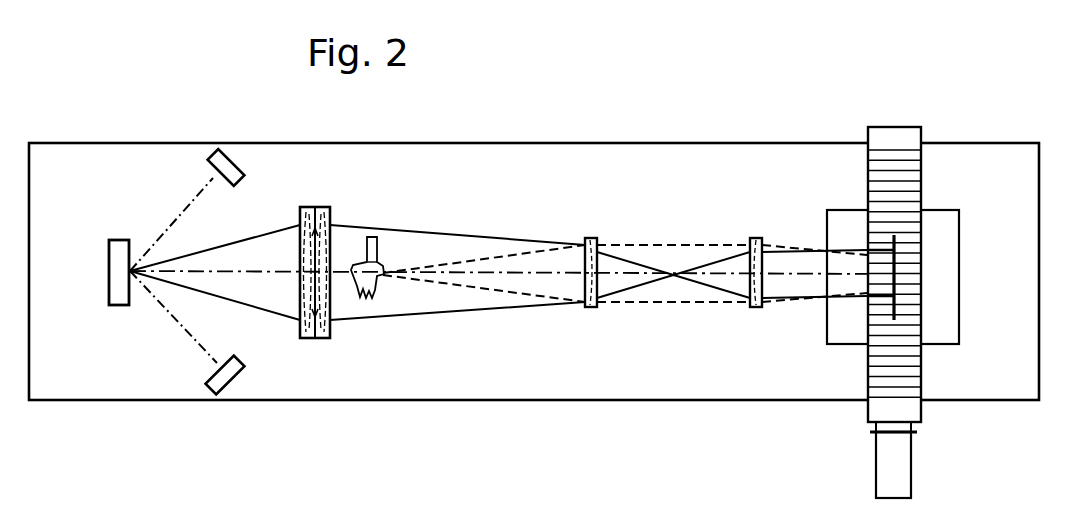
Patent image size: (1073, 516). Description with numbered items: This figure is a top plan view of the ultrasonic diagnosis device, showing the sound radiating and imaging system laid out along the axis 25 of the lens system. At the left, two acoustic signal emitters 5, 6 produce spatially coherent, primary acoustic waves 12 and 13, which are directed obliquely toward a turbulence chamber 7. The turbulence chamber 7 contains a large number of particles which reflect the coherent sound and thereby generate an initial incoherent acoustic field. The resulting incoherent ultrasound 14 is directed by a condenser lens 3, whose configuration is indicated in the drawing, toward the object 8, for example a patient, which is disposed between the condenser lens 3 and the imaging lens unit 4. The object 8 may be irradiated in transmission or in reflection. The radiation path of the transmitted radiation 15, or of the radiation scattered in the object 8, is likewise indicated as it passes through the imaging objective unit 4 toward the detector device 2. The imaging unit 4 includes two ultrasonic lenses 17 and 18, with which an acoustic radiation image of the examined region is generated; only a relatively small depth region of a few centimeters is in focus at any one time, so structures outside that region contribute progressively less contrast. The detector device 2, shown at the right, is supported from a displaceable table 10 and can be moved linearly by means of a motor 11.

The detector device 2 is at (948, 281).
The condenser lens 3 is at (318, 207).
The imaging lens unit 4 is at (725, 200).
The acoustic signal emitter 5 is at (236, 167).
The acoustic signal emitter 6 is at (225, 372).
The turbulence chamber 7 is at (116, 270).
The object 8 is at (372, 252).
The displaceable table 10 is at (911, 187).
The motor 11 is at (900, 457).
The primary acoustic wave 12 is at (183, 210).
The primary acoustic wave 13 is at (177, 330).
The incoherent ultrasound 14 is at (262, 300).
The transmitted radiation 15 is at (481, 286).
The ultrasonic lens 17 is at (590, 238).
The ultrasonic lens 18 is at (752, 238).
The axis 25 is at (241, 270).